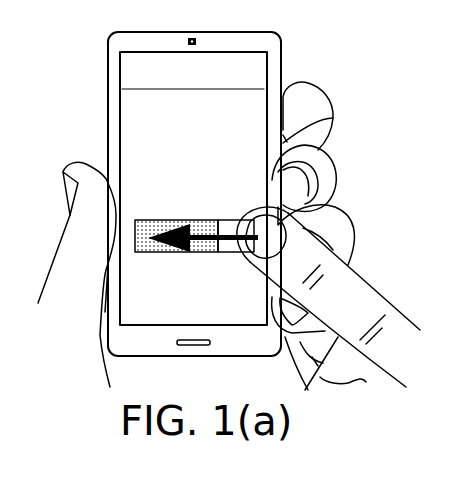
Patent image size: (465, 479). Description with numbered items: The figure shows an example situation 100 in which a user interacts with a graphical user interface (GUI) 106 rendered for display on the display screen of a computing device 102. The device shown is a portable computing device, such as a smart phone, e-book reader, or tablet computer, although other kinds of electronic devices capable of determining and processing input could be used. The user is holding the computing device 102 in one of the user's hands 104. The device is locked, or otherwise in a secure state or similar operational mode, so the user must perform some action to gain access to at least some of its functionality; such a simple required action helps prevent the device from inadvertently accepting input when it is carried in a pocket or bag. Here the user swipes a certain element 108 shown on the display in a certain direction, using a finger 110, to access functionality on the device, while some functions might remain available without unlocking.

The example situation 100 is at (379, 93).
The computing device 102 is at (107, 60).
The user's hand 104 is at (366, 382).
The graphical user interface 106 is at (240, 185).
The element 108 is at (205, 252).
The swiping finger 110 is at (375, 290).